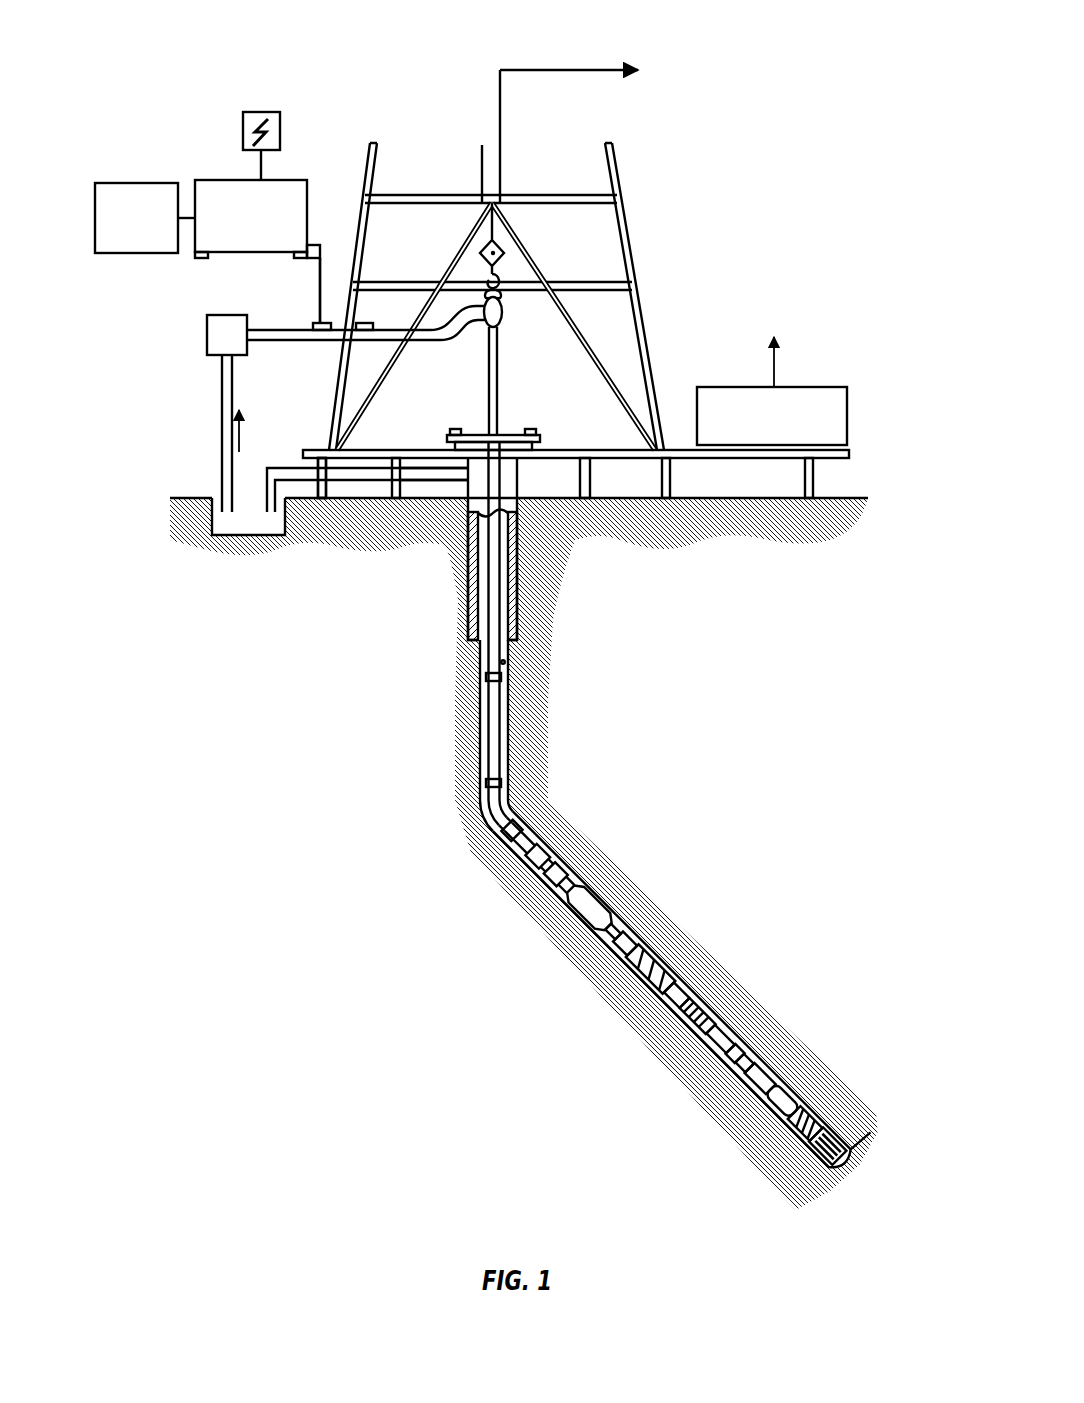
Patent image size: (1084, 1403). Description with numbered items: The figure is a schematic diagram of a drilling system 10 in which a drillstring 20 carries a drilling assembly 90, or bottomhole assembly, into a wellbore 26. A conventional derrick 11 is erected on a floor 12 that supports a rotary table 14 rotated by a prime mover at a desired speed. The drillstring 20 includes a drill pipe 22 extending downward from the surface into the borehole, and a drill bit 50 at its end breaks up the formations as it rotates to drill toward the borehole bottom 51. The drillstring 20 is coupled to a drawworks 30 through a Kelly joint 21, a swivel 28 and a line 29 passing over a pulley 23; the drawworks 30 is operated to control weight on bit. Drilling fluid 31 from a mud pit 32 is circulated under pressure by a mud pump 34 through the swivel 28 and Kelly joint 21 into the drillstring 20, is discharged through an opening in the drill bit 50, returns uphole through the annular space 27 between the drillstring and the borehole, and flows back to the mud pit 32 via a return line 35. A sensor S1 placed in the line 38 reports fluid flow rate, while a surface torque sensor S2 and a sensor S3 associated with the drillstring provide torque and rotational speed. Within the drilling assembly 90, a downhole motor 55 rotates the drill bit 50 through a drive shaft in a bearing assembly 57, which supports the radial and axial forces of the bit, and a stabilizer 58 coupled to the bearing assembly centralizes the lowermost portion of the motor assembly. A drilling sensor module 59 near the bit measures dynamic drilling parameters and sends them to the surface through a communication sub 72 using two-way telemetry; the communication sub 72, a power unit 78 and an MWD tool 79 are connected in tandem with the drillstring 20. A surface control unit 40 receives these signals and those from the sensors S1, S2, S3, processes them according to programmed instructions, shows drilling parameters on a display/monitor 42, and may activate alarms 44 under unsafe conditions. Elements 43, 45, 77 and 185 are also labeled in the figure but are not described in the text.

The drilling system 10 is at (233, 57).
The derrick 11 is at (650, 293).
The floor 12 is at (661, 446).
The rotary table 14 is at (505, 435).
The drillstring 20 is at (508, 722).
The Kelly joint 21 is at (499, 352).
The drill pipe 22 is at (481, 704).
The pulley 23 is at (489, 251).
The wellbore 26 is at (515, 811).
The annular space 27 is at (545, 843).
The swivel 28 is at (482, 323).
The line 29 is at (503, 168).
The drawworks 30 is at (820, 387).
The drilling fluid 31 is at (220, 509).
The mud pit 32 is at (250, 530).
The mud pump 34 is at (207, 336).
The return line 35 is at (423, 481).
The line 38 is at (330, 342).
The surface control unit 40 is at (230, 180).
The display/monitor 42 is at (262, 112).
The sensor 43 is at (317, 323).
The alarms 44 is at (137, 255).
The signal line 45 is at (314, 245).
The drill bit 50 is at (827, 1126).
The borehole bottom 51 is at (821, 1186).
The downhole motor 55 is at (684, 982).
The bearing assembly 57 is at (796, 1089).
The stabilizer 58 is at (811, 1112).
The drilling sensor module 59 is at (773, 1131).
The communication sub 72 is at (483, 806).
The stabilizer 77 is at (567, 918).
The power unit 78 is at (504, 848).
The MWD tool 79 is at (519, 869).
The drilling assembly 90 is at (728, 880).
The rig floor sensor 185 is at (352, 456).
The sensor S1 is at (367, 323).
The surface torque sensor S2 is at (531, 432).
The sensor S3 is at (455, 429).